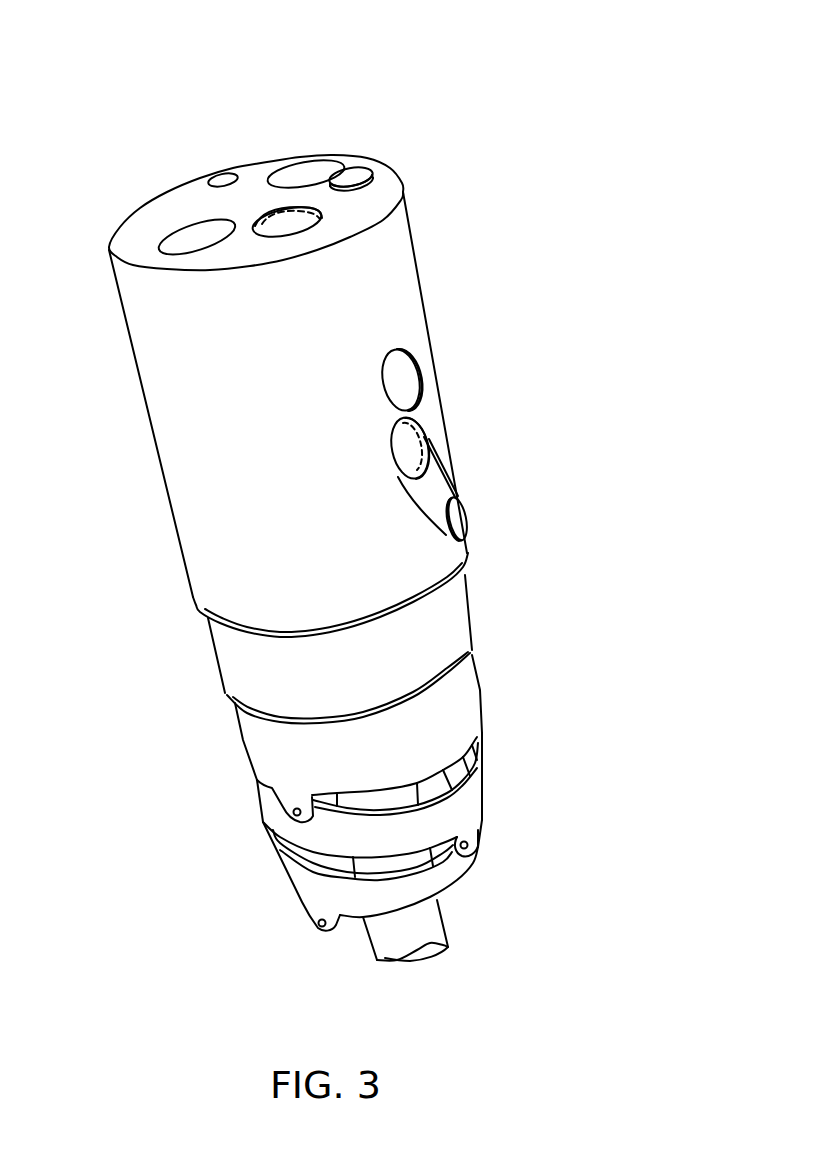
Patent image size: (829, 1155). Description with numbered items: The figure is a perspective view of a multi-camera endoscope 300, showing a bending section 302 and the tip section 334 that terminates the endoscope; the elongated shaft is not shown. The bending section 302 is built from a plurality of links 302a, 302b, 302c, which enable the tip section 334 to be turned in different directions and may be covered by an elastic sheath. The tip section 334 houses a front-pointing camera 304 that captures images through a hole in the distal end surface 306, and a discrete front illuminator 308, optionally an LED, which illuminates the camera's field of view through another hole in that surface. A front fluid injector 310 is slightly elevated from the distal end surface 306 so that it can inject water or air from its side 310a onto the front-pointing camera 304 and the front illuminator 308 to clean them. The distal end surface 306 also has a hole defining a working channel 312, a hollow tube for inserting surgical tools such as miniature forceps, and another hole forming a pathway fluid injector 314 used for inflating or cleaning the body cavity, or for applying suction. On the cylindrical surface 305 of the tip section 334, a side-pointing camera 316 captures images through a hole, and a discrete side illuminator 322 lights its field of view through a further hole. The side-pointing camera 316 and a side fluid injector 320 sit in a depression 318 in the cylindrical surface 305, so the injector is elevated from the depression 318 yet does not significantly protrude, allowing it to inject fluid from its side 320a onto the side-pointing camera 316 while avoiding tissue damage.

The multi-camera endoscope 300 is at (427, 81).
The bending section 302 is at (120, 673).
The link 302a is at (482, 697).
The link 302b is at (482, 783).
The link 302c is at (270, 878).
The front-pointing camera 304 is at (295, 228).
The cylindrical surface 305 is at (205, 562).
The distal end surface 306 is at (162, 210).
The discrete front illuminator 308 is at (163, 240).
The front fluid injector 310 is at (371, 167).
The side of front fluid injector 310a is at (378, 171).
The working channel 312 is at (315, 166).
The pathway fluid injector 314 is at (220, 174).
The side-pointing camera 316 is at (425, 419).
The depression 318 is at (447, 462).
The side fluid injector 320 is at (462, 517).
The side of side fluid injector 320a is at (446, 533).
The discrete side illuminator 322 is at (412, 380).
The tip section 334 is at (150, 447).